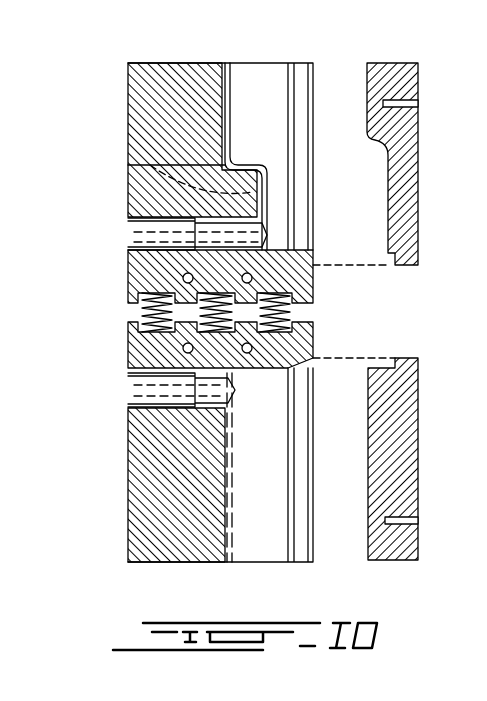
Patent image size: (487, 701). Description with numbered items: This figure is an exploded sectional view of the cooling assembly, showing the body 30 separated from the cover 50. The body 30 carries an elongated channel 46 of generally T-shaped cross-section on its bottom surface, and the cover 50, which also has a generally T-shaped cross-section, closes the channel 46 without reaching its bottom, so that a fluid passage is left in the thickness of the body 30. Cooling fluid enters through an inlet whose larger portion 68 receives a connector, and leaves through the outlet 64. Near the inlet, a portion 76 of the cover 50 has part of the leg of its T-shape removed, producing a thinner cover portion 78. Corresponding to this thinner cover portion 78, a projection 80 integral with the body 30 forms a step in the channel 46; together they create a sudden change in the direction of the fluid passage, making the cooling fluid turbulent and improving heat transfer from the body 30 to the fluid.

The body 30 is at (147, 100).
The channel 46 is at (242, 135).
The projection 80 is at (128, 166).
The larger portion 68 is at (127, 232).
The outlet 64 is at (143, 392).
The portion of the cover 76 is at (383, 177).
The thinner cover portion 78 is at (405, 210).
The cover 50 is at (428, 78).